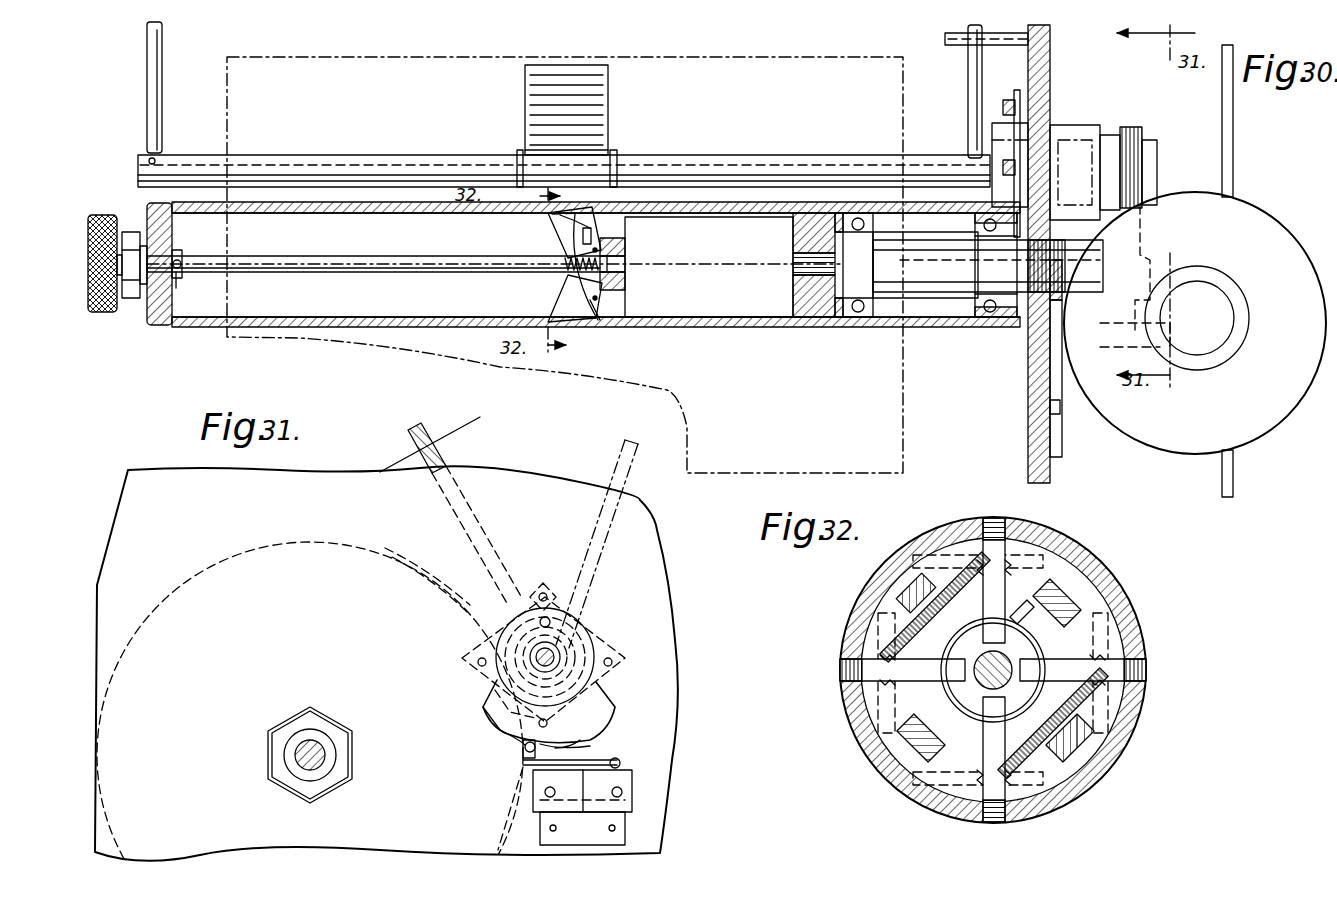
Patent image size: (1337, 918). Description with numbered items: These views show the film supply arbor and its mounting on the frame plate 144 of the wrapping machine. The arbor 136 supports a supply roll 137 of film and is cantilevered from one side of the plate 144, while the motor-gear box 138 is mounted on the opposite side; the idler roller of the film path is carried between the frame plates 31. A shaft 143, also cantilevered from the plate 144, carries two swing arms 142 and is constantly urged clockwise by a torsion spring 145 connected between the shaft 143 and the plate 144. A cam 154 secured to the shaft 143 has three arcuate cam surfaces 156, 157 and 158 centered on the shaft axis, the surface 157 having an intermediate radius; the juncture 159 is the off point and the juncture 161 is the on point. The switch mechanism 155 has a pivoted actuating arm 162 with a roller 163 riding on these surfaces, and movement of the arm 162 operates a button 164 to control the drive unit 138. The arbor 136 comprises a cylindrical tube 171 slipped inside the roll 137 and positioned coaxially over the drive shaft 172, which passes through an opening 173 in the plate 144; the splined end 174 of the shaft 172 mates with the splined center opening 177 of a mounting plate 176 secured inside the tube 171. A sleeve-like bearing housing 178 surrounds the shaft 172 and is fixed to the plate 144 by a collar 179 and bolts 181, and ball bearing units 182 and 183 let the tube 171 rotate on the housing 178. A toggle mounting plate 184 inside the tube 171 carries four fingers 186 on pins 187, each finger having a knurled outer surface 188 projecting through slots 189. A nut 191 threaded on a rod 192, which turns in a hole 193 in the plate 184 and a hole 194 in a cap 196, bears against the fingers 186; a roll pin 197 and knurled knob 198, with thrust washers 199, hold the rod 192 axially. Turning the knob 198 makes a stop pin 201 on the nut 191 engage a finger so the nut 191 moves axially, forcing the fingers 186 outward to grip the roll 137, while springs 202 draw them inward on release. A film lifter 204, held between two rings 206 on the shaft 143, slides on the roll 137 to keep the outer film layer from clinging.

In FIG. 30, the plates 31 is at (1234, 486).
In FIG. 30, the arbor 136 is at (198, 334).
In FIG. 30, the supply roll 137 is at (905, 418).
In FIG. 31, the supply roll 137 is at (185, 590).
In FIG. 30, the motor-gear box 138 is at (1172, 432).
In FIG. 30, the swing arms 142 is at (182, 86).
In FIG. 31, the swing arms 142 is at (425, 430).
In FIG. 30, the shaft 143 is at (825, 158).
In FIG. 31, the shaft 143 is at (590, 642).
In FIG. 30, the plate 144 is at (1050, 76).
In FIG. 31, the plate 144 is at (665, 588).
In FIG. 30, the torsion spring 145 is at (1130, 128).
In FIG. 31, the torsion spring 145 is at (570, 668).
In FIG. 30, the cam 154 is at (1150, 205).
In FIG. 31, the cam 154 is at (603, 712).
In FIG. 31, the switch mechanism 155 is at (640, 790).
In FIG. 31, the cam surface 156 is at (495, 722).
In FIG. 31, the cam surface 157 is at (522, 748).
In FIG. 31, the cam surface 158 is at (602, 728).
In FIG. 31, the juncture 159 is at (512, 740).
In FIG. 31, the juncture 161 is at (560, 750).
In FIG. 31, the actuating arm 162 is at (582, 828).
In FIG. 31, the roller 163 is at (528, 758).
In FIG. 31, the button 164 is at (520, 770).
In FIG. 30, the cylindrical tube 171 is at (692, 328).
In FIG. 30, the drive shaft 172 is at (950, 285).
In FIG. 31, the drive shaft 172 is at (298, 752).
In FIG. 30, the opening 173 is at (1030, 325).
In FIG. 30, the splined end 174 is at (795, 268).
In FIG. 30, the mounting plate 176 is at (800, 290).
In FIG. 30, the splined center opening 177 is at (800, 262).
In FIG. 30, the bearing housing 178 is at (890, 326).
In FIG. 31, the bearing housing 178 is at (322, 735).
In FIG. 30, the collar 179 is at (1017, 90).
In FIG. 31, the collar 179 is at (543, 592).
In FIG. 30, the bolts 181 is at (1003, 168).
In FIG. 31, the bolts 181 is at (547, 597).
In FIG. 30, the ball bearing unit 182 is at (848, 326).
In FIG. 30, the ball bearing unit 183 is at (990, 320).
In FIG. 30, the toggle mounting plate 184 is at (626, 288).
In FIG. 30, the fingers 186 is at (560, 232).
In FIG. 32, the fingers 186 is at (1000, 545).
In FIG. 30, the pins 187 is at (612, 234).
In FIG. 32, the pins 187 is at (1040, 560).
In FIG. 30, the knurled outer surface 188 is at (572, 212).
In FIG. 30, the slots 189 is at (560, 296).
In FIG. 32, the slots 189 is at (993, 517).
In FIG. 30, the nut 191 is at (596, 322).
In FIG. 32, the nut 191 is at (1025, 650).
In FIG. 30, the threaded rod 192 is at (342, 262).
In FIG. 32, the threaded rod 192 is at (985, 682).
In FIG. 30, the hole 193 is at (625, 265).
In FIG. 30, the hole 194 is at (180, 262).
In FIG. 30, the cap 196 is at (182, 290).
In FIG. 30, the roll pin 197 is at (183, 266).
In FIG. 30, the knurled knob 198 is at (94, 214).
In FIG. 30, the thrust washers 199 is at (132, 292).
In FIG. 30, the stop pin 201 is at (582, 238).
In FIG. 32, the stop pin 201 is at (1040, 592).
In FIG. 32, the springs 202 is at (920, 618).
In FIG. 30, the film lifter 204 is at (595, 80).
In FIG. 31, the film lifter 204 is at (432, 585).
In FIG. 30, the rings 206 is at (518, 162).